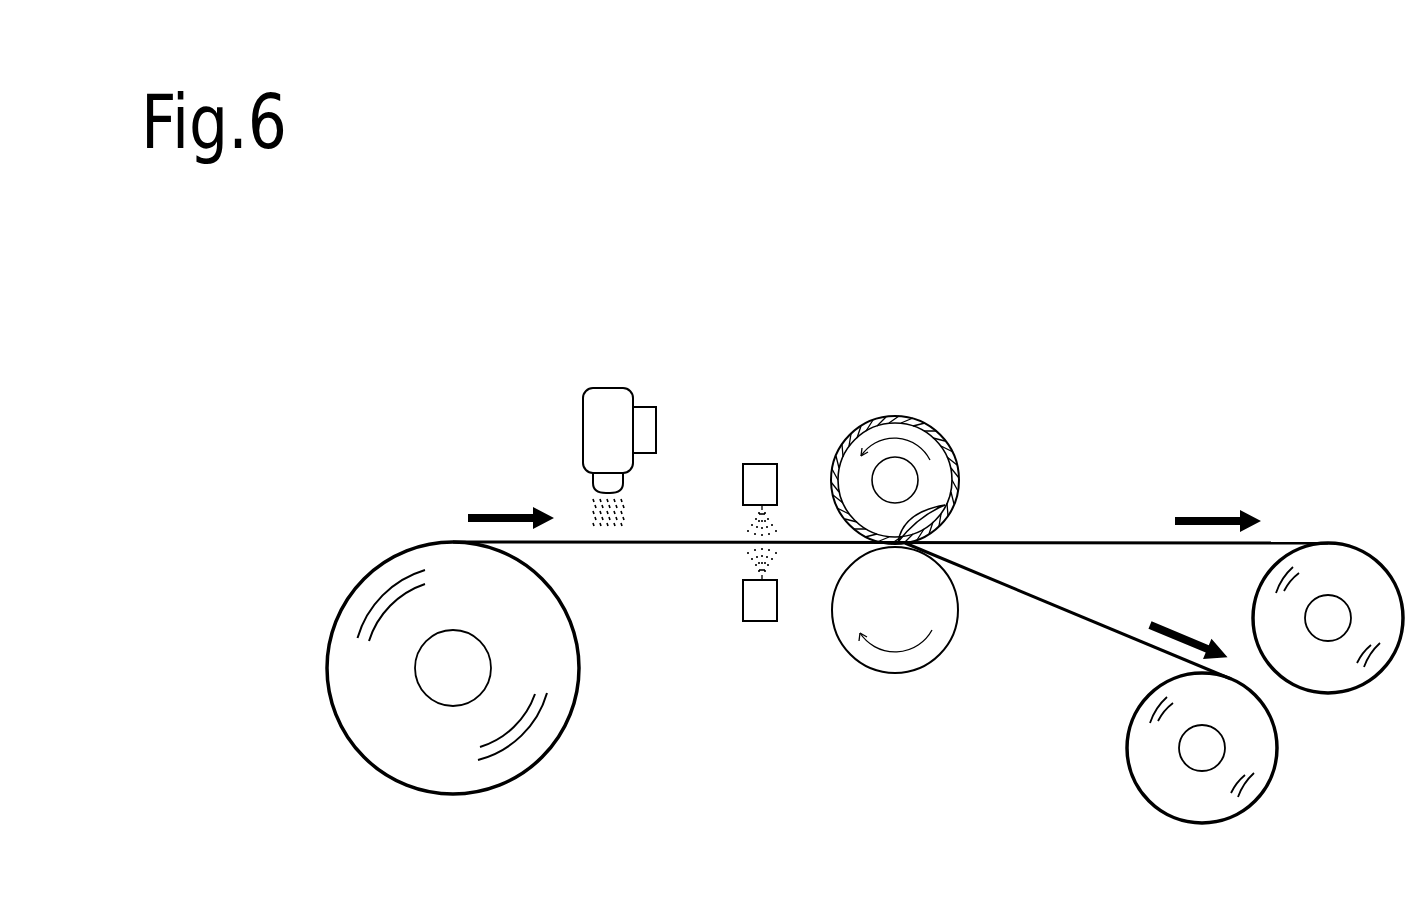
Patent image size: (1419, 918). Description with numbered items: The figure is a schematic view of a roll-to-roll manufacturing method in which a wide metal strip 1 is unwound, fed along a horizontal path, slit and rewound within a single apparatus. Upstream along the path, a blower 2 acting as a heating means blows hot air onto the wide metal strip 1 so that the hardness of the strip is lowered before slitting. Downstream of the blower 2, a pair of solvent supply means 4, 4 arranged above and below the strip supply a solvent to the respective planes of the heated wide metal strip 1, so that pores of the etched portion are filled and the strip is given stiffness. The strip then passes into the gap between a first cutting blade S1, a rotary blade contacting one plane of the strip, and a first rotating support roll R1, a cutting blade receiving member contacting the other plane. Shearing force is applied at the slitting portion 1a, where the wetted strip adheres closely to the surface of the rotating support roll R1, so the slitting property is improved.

The wide metal strip 1 is at (692, 545).
The slitting portion 1a is at (953, 506).
The blower 2 is at (615, 405).
The solvent supply means 4 is at (759, 474).
The first cutting blade S1 is at (940, 465).
The first rotating support roll R1 is at (932, 608).